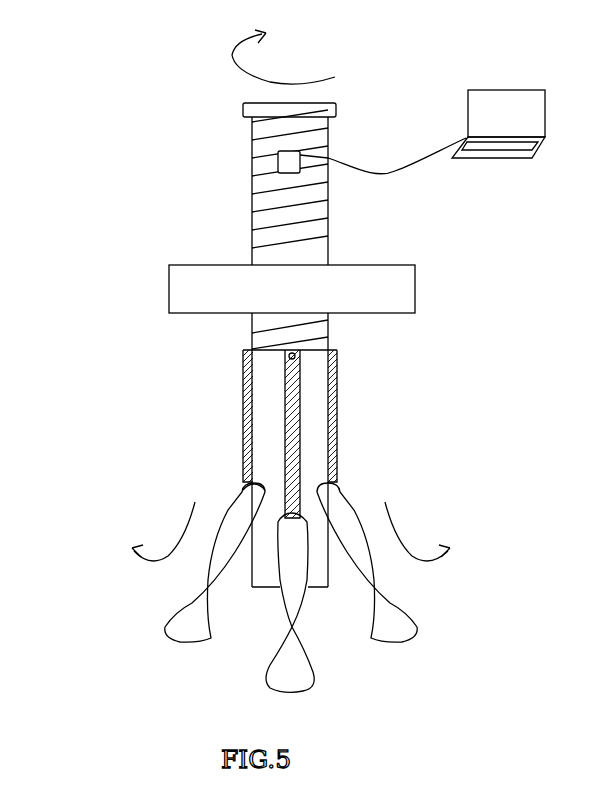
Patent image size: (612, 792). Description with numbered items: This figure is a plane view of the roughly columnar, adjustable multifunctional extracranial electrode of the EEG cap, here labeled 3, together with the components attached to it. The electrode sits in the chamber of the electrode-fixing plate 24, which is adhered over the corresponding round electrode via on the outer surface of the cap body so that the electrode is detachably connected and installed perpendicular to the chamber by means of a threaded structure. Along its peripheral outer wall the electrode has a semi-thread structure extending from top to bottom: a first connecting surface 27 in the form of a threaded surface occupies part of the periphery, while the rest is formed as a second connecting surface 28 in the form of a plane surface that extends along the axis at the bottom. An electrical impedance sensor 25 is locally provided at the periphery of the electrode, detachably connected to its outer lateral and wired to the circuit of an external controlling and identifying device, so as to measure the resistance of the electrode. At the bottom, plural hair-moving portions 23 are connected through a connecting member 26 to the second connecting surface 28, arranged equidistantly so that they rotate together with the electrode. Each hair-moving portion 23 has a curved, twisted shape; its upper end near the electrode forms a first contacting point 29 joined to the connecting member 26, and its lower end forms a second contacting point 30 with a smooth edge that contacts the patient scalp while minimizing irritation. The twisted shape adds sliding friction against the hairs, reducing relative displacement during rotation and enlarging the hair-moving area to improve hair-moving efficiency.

The stirring device 3 is at (227, 213).
The hair-moving portion 23 is at (240, 503).
The electrode-fixing plate 24 is at (390, 293).
The electrical impedance sensor 25 is at (278, 158).
The connecting member 26 is at (337, 410).
The first connecting surface 27 is at (308, 193).
The second connecting surface 28 is at (312, 363).
The first contacting point 29 is at (245, 483).
The second contacting point 30 is at (185, 642).